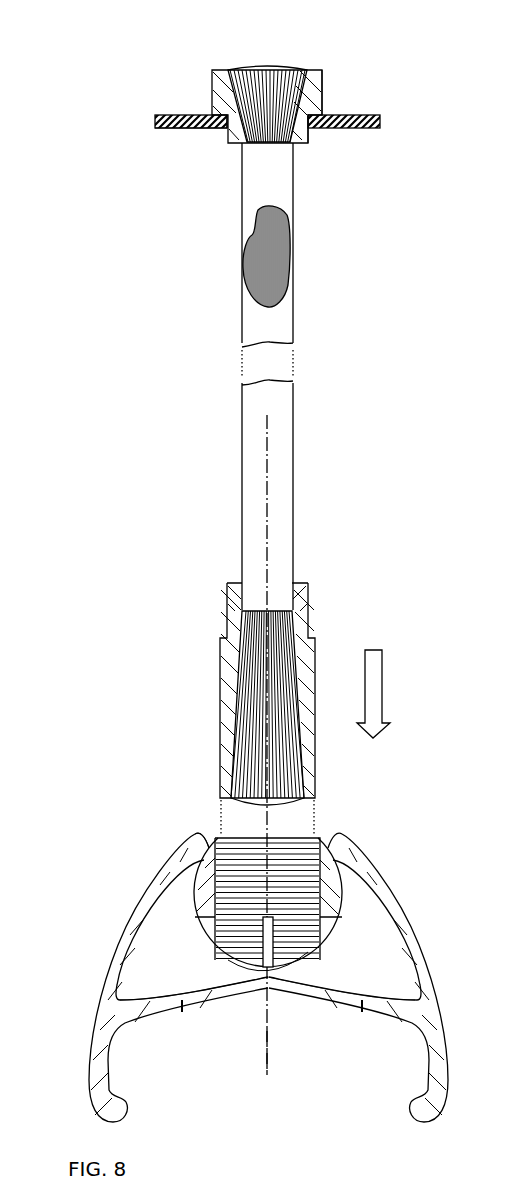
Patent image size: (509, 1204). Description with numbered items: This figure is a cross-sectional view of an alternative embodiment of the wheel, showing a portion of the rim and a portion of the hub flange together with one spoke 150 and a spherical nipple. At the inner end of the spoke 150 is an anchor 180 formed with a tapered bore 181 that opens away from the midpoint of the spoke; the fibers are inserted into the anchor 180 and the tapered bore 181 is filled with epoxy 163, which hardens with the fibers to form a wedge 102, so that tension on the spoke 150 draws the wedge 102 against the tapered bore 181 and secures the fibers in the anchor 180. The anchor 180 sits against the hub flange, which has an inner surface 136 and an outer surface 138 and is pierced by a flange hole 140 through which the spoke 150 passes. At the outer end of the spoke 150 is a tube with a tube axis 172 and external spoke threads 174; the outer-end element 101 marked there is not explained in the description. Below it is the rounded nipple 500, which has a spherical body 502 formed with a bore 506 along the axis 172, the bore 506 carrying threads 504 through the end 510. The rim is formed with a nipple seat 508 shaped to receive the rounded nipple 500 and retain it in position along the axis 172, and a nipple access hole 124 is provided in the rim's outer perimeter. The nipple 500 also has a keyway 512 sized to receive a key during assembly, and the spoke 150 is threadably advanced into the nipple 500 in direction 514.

The brush head 101 is at (275, 612).
The wedge 102 is at (283, 147).
The nipple access hole 124 is at (362, 1008).
The inner surface 136 is at (167, 113).
The outer surface 138 is at (188, 130).
The flange hole 140 is at (227, 132).
The spoke 150 is at (178, 285).
The epoxy 163 is at (277, 67).
The tube axis 172 is at (267, 1028).
The external spoke threads 174 is at (233, 662).
The anchor 180 is at (310, 108).
The tapered bore 181 is at (230, 95).
The rounded nipple 500 is at (353, 831).
The spherical body 502 is at (305, 952).
The threads 504 is at (302, 912).
The bore 506 is at (240, 836).
The nipple seat 508 is at (207, 867).
The end 510 is at (228, 960).
The keyway 512 is at (260, 930).
The direction 514 is at (373, 690).